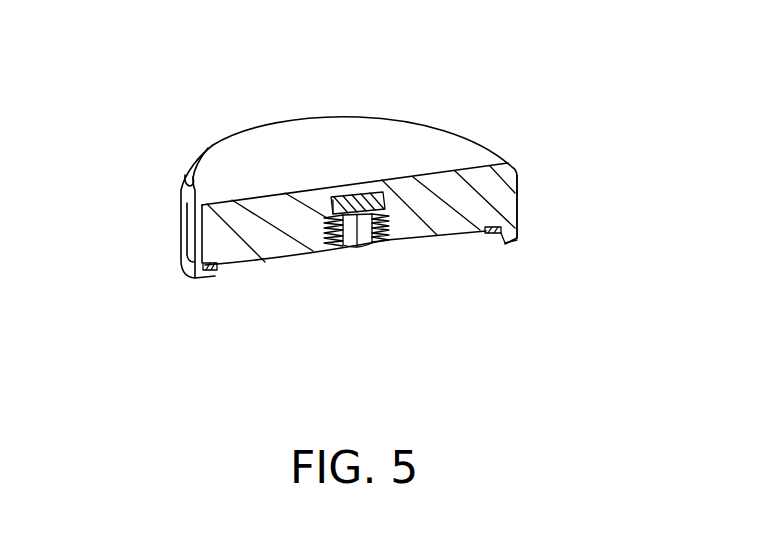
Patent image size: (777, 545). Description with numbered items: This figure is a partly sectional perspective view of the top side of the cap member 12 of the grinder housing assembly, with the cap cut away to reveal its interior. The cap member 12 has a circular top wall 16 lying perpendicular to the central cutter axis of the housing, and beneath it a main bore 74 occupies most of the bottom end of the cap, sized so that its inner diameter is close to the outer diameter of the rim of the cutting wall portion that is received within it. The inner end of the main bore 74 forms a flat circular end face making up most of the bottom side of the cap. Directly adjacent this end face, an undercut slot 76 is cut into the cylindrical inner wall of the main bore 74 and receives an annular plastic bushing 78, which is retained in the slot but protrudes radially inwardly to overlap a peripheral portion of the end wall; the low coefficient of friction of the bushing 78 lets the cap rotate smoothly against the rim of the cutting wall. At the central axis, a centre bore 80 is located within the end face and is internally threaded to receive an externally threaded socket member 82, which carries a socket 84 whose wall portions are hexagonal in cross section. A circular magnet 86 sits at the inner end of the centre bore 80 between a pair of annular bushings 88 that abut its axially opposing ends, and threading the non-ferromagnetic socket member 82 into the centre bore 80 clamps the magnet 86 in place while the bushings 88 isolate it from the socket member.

The cap member 12 is at (132, 162).
The circular top wall 16 is at (352, 138).
The main bore 74 is at (206, 279).
The undercut slot 76 is at (504, 233).
The annular plastic bushing 78 is at (490, 234).
The centre bore 80 is at (338, 179).
The externally threaded socket member 82 is at (328, 245).
The socket 84 is at (353, 233).
The circular magnet 86 is at (358, 202).
The annular bushings 88 is at (350, 200).